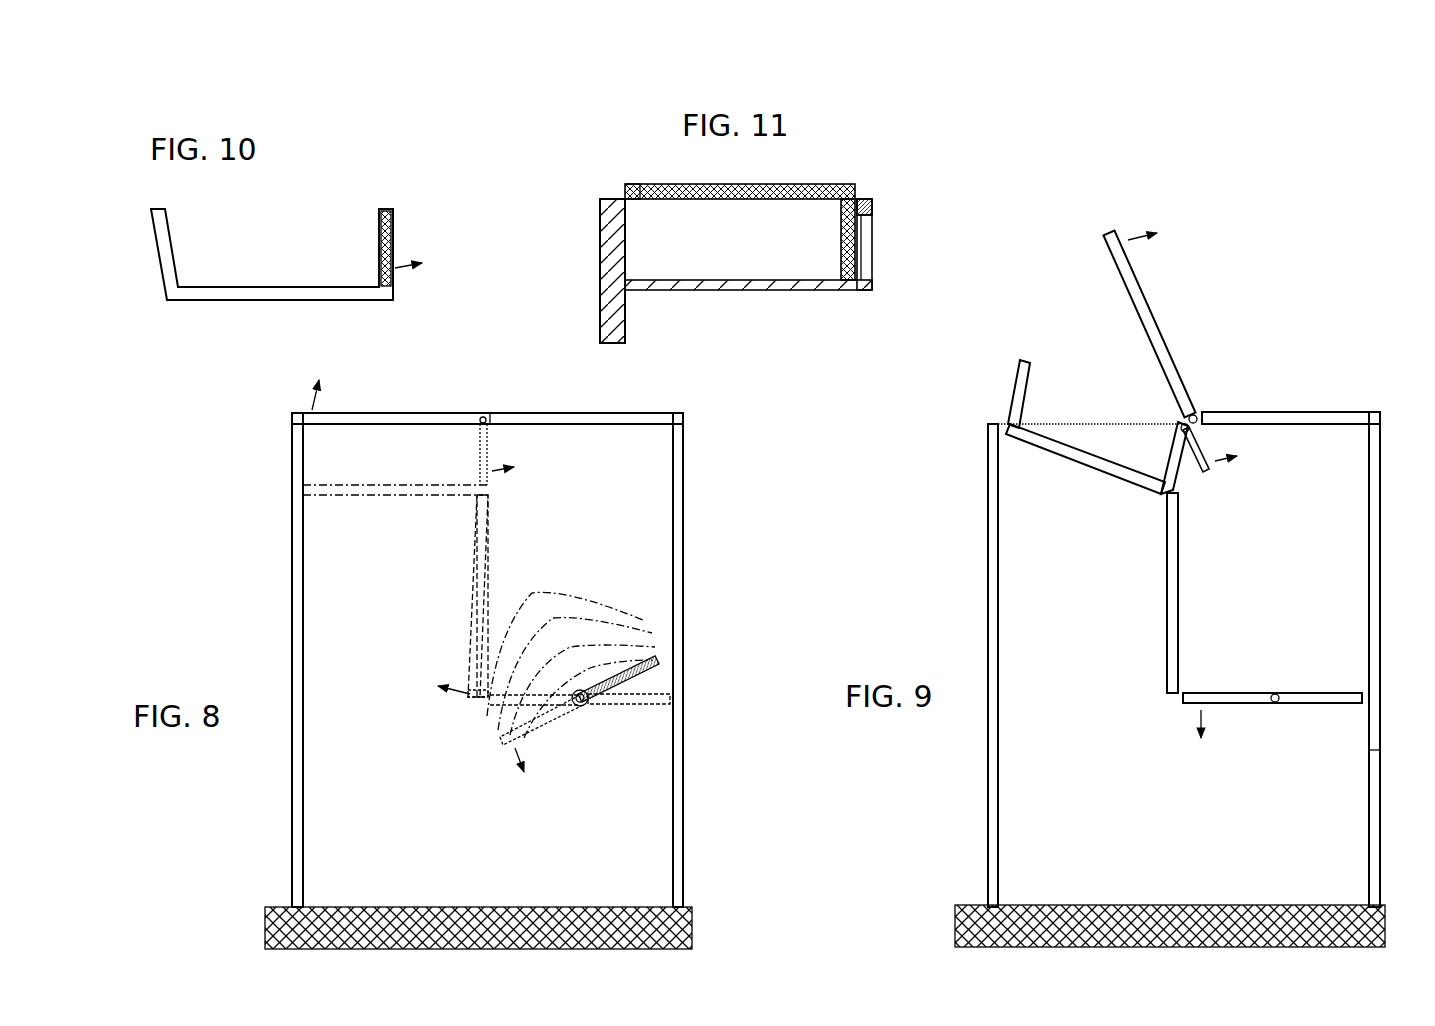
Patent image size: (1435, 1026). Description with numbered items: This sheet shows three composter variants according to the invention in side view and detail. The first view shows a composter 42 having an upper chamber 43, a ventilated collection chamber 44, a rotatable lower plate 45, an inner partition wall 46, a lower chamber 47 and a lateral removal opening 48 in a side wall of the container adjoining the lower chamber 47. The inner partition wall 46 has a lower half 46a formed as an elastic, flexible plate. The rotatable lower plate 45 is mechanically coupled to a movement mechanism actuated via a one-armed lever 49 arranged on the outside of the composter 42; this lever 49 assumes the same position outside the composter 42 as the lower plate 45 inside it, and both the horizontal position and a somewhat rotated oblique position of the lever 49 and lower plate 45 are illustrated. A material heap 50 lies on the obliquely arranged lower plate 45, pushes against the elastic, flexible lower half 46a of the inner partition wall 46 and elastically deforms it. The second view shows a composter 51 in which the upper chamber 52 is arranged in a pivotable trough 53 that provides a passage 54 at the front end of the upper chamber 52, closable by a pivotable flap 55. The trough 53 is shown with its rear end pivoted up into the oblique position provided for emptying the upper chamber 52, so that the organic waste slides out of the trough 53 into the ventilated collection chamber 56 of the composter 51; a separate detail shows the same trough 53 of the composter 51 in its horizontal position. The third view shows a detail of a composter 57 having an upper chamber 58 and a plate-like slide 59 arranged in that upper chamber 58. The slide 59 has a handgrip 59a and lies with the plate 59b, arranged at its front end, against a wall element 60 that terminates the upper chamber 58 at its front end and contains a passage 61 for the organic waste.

In FIG. 8, the composter 42 is at (280, 610).
In FIG. 8, the upper chamber 43 is at (420, 448).
In FIG. 8, the ventilated collection chamber 44 is at (658, 473).
In FIG. 8, the rotatable lower plate 45 is at (550, 720).
In FIG. 8, the inner partition wall 46 is at (480, 582).
In FIG. 8, the lower half of the inner partition wall 46a is at (468, 693).
In FIG. 8, the lower chamber 47 is at (637, 775).
In FIG. 8, the lateral removal opening 48 is at (680, 846).
In FIG. 8, the one-armed lever 49 is at (657, 666).
In FIG. 8, the material heap 50 is at (568, 592).
In FIG. 9, the composter 51 is at (1301, 366).
In FIG. 9, the upper chamber 52 is at (1044, 400).
In FIG. 10, the pivotable trough 53 is at (165, 258).
In FIG. 9, the pivotable trough 53 is at (1100, 458).
In FIG. 9, the passage 54 is at (1176, 463).
In FIG. 10, the pivotable flap 55 is at (395, 238).
In FIG. 9, the pivotable flap 55 is at (1196, 455).
In FIG. 9, the ventilated collection chamber 56 is at (1320, 570).
In FIG. 11, the composter 57 is at (583, 185).
In FIG. 11, the upper chamber 58 is at (753, 245).
In FIG. 11, the plate-like slide 59 is at (818, 184).
In FIG. 11, the handgrip 59a is at (638, 184).
In FIG. 11, the plate 59b is at (848, 250).
In FIG. 11, the wall element 60 is at (870, 201).
In FIG. 11, the passage 61 is at (868, 246).